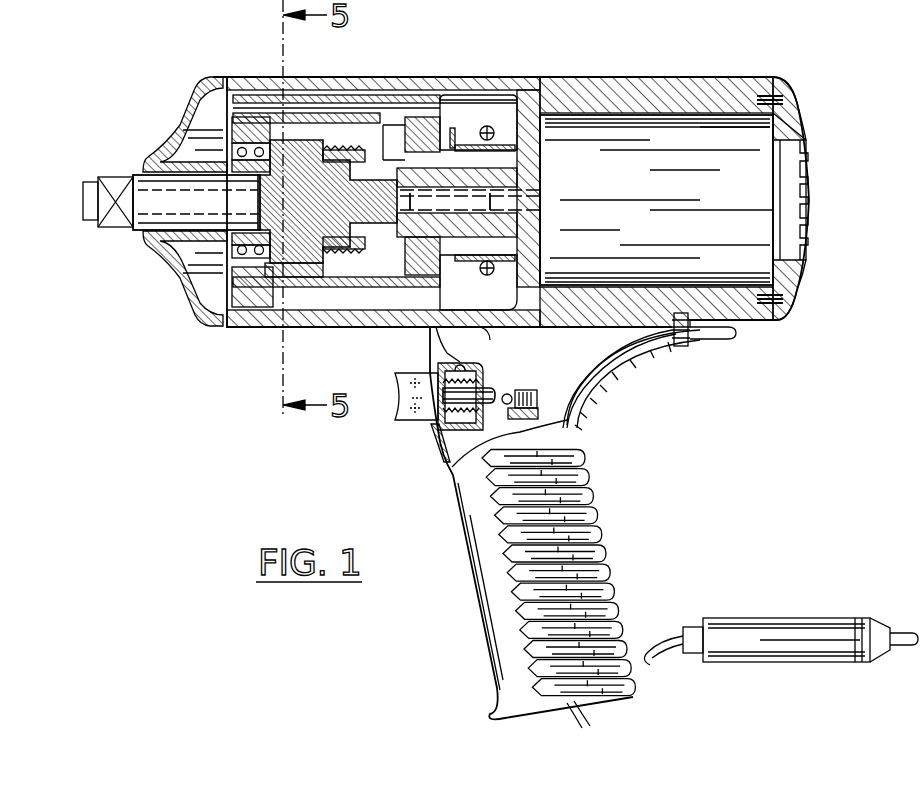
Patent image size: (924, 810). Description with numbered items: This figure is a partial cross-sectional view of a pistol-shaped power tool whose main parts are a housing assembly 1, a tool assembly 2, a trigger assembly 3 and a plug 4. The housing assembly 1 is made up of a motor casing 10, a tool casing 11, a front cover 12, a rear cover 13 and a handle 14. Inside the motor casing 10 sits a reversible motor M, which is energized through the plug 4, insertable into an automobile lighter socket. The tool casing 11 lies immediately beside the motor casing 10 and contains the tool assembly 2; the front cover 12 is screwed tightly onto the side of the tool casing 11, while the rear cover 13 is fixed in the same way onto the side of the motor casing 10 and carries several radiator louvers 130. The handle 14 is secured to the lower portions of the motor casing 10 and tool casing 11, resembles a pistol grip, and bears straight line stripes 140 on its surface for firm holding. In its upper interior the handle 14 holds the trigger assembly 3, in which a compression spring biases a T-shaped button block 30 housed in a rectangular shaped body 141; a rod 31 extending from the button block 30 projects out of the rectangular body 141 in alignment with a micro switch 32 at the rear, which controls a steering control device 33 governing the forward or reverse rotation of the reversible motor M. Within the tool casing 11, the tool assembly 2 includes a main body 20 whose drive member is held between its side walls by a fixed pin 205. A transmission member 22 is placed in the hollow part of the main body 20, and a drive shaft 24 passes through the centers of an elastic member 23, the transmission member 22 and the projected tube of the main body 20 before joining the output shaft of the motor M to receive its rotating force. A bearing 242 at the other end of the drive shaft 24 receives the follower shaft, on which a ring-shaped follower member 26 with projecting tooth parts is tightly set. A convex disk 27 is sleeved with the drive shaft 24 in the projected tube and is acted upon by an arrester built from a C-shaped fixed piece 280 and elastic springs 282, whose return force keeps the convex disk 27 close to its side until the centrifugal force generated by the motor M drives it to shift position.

The housing assembly 1 is at (608, 70).
The tool assembly 2 is at (304, 290).
The trigger assembly 3 is at (490, 362).
The plug 4 is at (807, 625).
The motor casing 10 is at (660, 122).
The tool casing 11 is at (492, 95).
The front cover 12 is at (191, 147).
The rear cover 13 is at (799, 124).
The handle 14 is at (470, 595).
The main body 20 is at (262, 302).
The transmission member 22 is at (391, 292).
The elastic member 23 is at (335, 222).
The drive shaft 24 is at (450, 160).
The follower member 26 is at (340, 305).
The convex disk 27 is at (466, 264).
The T-shaped button block 30 is at (407, 428).
The compression spring / rod 31 is at (445, 430).
The micro switch 32 is at (578, 400).
The steering control device 33 is at (718, 340).
The radiator louvers 130 is at (810, 199).
The straight line stripes 140 is at (600, 570).
The rectangular shaped body 141 is at (460, 365).
The fixed pin 205 is at (311, 100).
The bearing 242 is at (408, 290).
The C-shaped fixed piece 280 is at (516, 128).
The elastic springs 282 is at (482, 128).
The reversible motor M is at (738, 125).